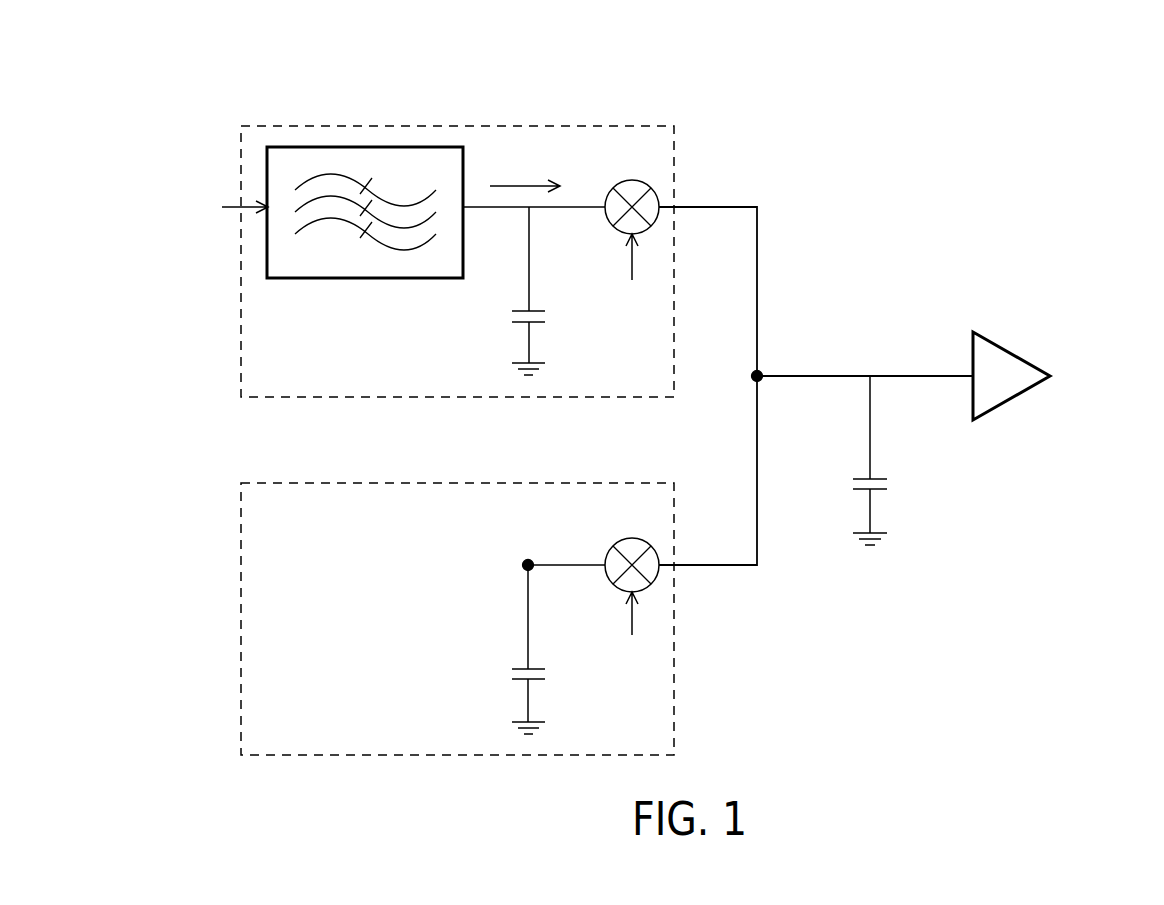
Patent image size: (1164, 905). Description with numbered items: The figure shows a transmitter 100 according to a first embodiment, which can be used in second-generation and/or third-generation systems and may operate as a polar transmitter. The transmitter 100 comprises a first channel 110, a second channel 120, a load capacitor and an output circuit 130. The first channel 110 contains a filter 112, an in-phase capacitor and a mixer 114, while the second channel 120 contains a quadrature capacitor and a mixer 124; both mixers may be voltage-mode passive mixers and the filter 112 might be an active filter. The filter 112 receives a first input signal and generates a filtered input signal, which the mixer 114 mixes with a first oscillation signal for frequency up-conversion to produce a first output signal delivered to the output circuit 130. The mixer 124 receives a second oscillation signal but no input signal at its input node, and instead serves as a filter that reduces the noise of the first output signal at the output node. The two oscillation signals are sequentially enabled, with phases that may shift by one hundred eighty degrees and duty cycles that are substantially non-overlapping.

The transmitter 100 is at (1053, 165).
The first channel 110 is at (572, 126).
The filter 112 is at (355, 147).
The mixer 114 is at (631, 179).
The second channel 120 is at (570, 483).
The mixer 124 is at (632, 538).
The output circuit 130 is at (1015, 352).